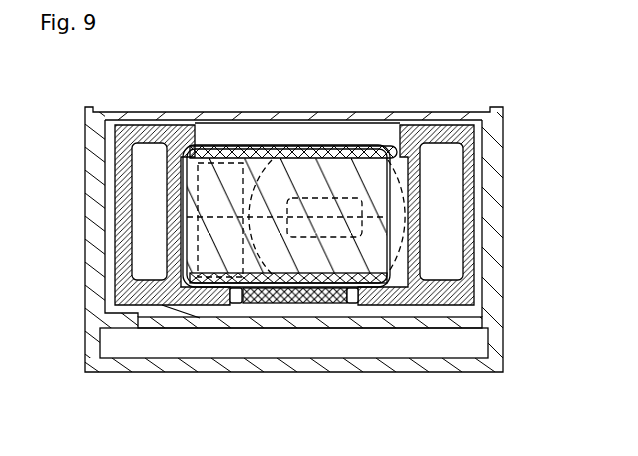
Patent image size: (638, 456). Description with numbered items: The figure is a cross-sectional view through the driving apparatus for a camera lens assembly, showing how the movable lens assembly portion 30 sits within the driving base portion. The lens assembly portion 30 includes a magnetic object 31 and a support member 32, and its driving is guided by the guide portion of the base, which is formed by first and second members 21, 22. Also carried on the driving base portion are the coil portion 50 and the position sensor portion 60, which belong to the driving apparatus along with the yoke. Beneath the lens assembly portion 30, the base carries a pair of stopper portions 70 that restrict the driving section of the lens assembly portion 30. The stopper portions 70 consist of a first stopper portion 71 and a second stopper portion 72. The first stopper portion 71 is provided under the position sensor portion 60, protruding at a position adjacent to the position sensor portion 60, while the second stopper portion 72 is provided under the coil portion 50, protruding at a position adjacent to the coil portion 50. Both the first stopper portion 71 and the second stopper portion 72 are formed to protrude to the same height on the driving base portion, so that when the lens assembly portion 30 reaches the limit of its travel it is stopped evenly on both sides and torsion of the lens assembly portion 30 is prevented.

The first member 21 is at (138, 259).
The second member 22 is at (447, 190).
The lens assembly portion 30 is at (156, 118).
The magnetic object 31 is at (255, 157).
The support member 32 is at (122, 193).
The coil portion 50 is at (394, 190).
The position sensor portion 60 is at (190, 158).
The stopper portions 70 is at (270, 417).
The first stopper portion 71 is at (208, 281).
The second stopper portion 72 is at (377, 290).